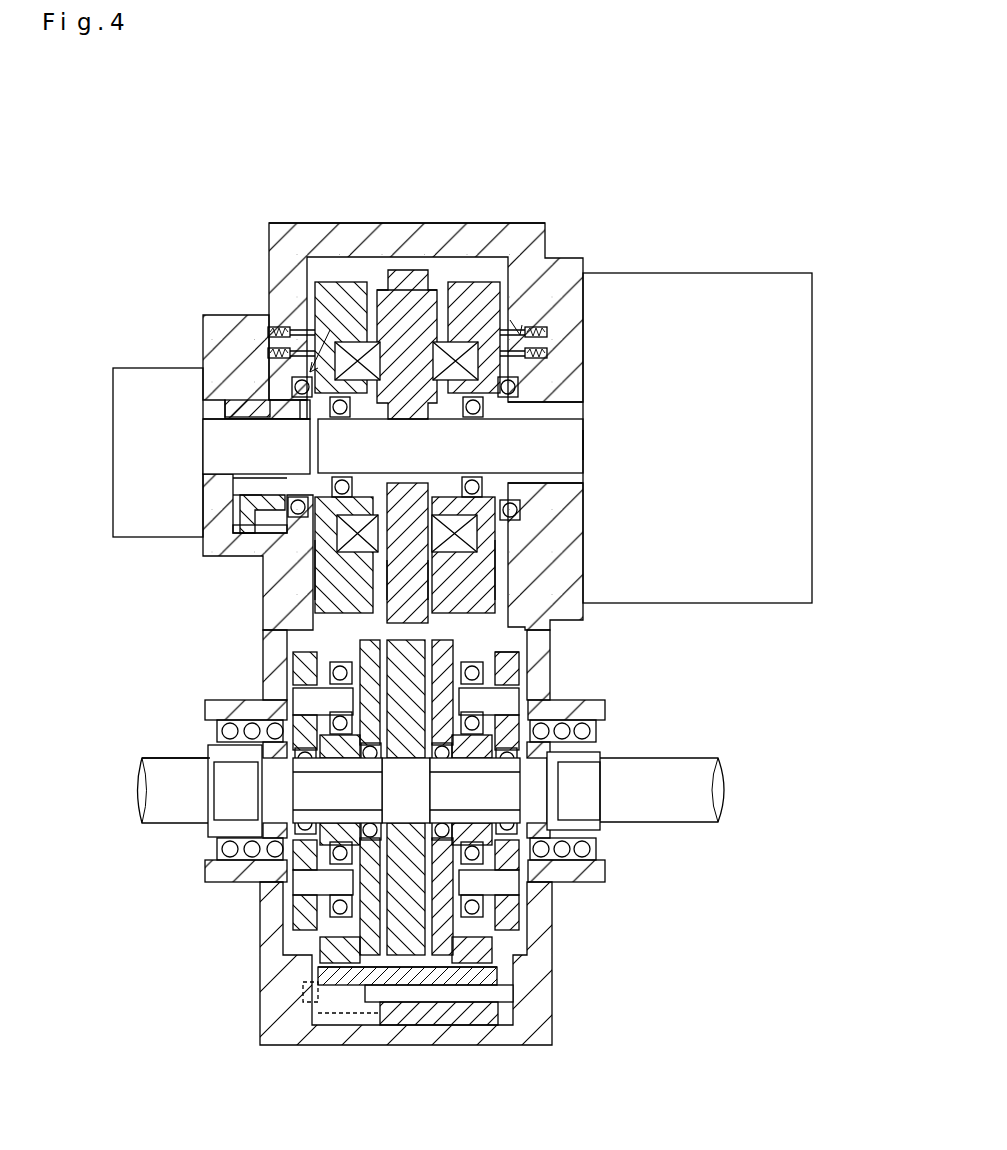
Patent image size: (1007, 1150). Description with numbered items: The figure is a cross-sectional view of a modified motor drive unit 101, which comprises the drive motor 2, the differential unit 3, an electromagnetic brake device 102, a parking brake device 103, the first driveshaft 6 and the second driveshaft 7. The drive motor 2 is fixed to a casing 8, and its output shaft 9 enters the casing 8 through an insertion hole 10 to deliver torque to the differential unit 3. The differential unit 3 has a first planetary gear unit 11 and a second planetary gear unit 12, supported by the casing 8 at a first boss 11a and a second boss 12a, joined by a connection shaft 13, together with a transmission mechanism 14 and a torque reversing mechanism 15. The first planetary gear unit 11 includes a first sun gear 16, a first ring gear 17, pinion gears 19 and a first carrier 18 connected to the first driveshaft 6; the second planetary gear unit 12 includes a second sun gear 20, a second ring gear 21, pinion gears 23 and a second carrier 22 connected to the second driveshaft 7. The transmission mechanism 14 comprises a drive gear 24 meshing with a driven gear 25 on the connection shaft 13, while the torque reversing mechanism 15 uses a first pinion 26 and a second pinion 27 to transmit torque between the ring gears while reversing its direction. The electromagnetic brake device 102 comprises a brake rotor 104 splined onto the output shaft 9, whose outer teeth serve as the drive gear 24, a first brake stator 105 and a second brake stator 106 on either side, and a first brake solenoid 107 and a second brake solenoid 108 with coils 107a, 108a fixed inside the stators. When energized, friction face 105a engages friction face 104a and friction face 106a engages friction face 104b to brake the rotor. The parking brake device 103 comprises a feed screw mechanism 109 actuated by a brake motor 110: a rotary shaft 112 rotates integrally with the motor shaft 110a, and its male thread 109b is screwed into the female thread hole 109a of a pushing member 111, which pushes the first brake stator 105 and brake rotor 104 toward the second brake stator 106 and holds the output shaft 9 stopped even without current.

The motor drive unit 101 is at (642, 127).
The electromagnetic brake device 102 is at (535, 160).
The parking brake device 103 is at (127, 283).
The brake rotor 104 is at (405, 285).
The friction face 104a is at (390, 580).
The friction face 104b is at (430, 595).
The first brake stator 105 is at (345, 300).
The friction face 105a is at (345, 557).
The second brake stator 106 is at (462, 330).
The friction face 106a is at (470, 580).
The first brake solenoid 107 is at (328, 335).
The coil 107a is at (300, 375).
The second brake solenoid 108 is at (495, 335).
The coil 108a is at (520, 332).
The feed screw mechanism 109 is at (235, 400).
The female thread hole 109a is at (275, 478).
The male thread 109b is at (235, 494).
The brake motor 110 is at (155, 390).
The motor shaft 110a is at (213, 440).
The pushing member 111 is at (240, 510).
The rotary shaft 112 is at (280, 430).
The drive motor 2 is at (760, 275).
The differential unit 3 is at (290, 940).
The first driveshaft 6 is at (155, 770).
The second driveshaft 7 is at (710, 835).
The casing 8 is at (530, 250).
The output shaft 9 is at (560, 445).
The insertion hole 10 is at (565, 478).
The first planetary gear unit 11 is at (285, 655).
The first boss 11a is at (235, 832).
The second planetary gear unit 12 is at (520, 960).
The second boss 12a is at (595, 830).
The connection shaft 13 is at (392, 789).
The transmission mechanism 14 is at (685, 663).
The torque reversing mechanism 15 is at (415, 1089).
The first sun gear 16 is at (215, 770).
The first ring gear 17 is at (328, 975).
The first carrier 18 is at (300, 735).
The pinion gears 19 is at (330, 648).
The second sun gear 20 is at (490, 800).
The second ring gear 21 is at (462, 990).
The second carrier 22 is at (555, 800).
The pinion gears 23 is at (515, 712).
The drive gear 24 is at (490, 658).
The driven gear 25 is at (470, 695).
The first pinion 26 is at (370, 995).
The second pinion 27 is at (425, 985).